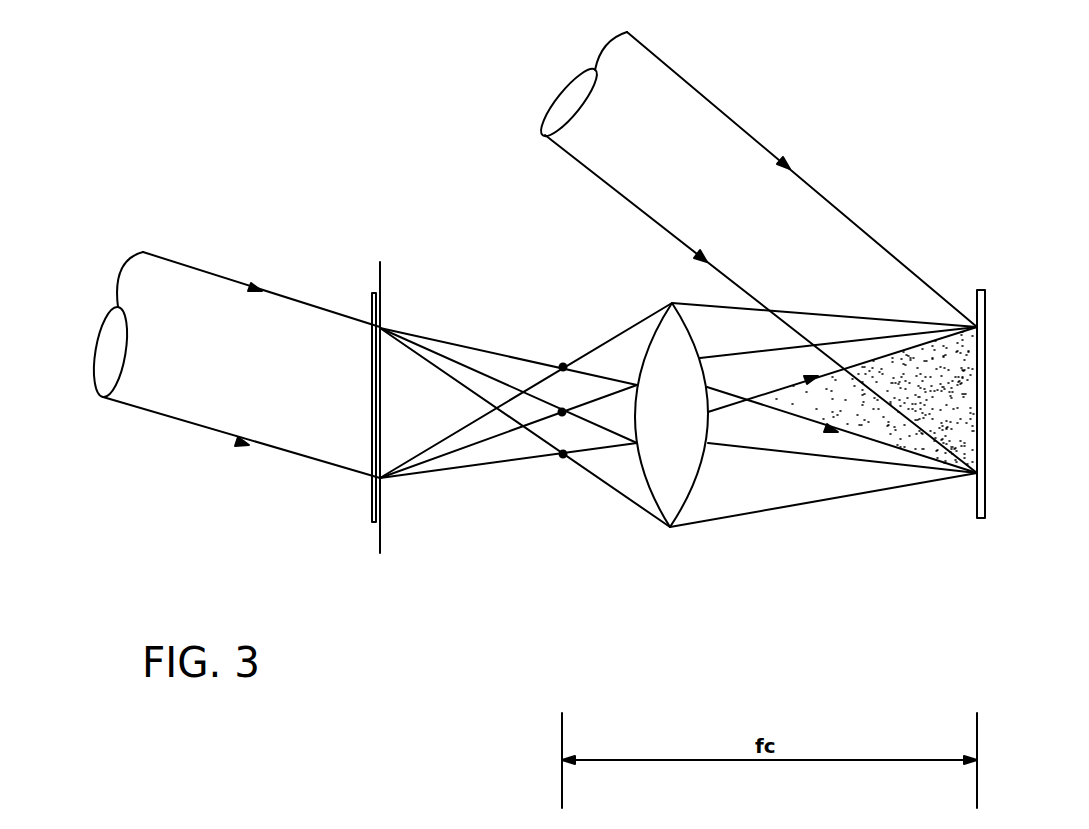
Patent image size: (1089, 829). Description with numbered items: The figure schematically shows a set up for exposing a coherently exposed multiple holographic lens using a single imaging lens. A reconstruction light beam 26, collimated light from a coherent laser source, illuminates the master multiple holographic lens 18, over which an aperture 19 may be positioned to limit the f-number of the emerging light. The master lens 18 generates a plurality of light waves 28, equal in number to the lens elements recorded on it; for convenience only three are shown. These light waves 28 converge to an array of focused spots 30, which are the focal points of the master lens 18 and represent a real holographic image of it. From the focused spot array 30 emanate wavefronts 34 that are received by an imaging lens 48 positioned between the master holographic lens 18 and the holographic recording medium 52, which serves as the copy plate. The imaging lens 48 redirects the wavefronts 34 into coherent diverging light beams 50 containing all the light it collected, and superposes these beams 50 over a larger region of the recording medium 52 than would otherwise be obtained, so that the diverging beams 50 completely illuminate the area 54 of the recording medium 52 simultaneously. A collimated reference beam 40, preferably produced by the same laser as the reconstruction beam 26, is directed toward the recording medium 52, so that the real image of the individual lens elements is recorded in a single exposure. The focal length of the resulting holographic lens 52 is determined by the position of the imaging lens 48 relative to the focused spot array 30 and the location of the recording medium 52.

The master multiple holographic lens 18 is at (372, 503).
The aperture 19 is at (380, 535).
The reconstruction light beam 26 is at (141, 409).
The plurality of light waves 28 is at (448, 330).
The array of focused spots 30 is at (568, 350).
The array of light beams (wavefronts) 34 is at (582, 485).
The reference beam 40 is at (713, 100).
The imaging lens 48 is at (672, 303).
The diverging light beams 50 is at (859, 506).
The holographic recording medium (copy plate) 52 is at (987, 300).
The illuminated area 54 is at (990, 328).